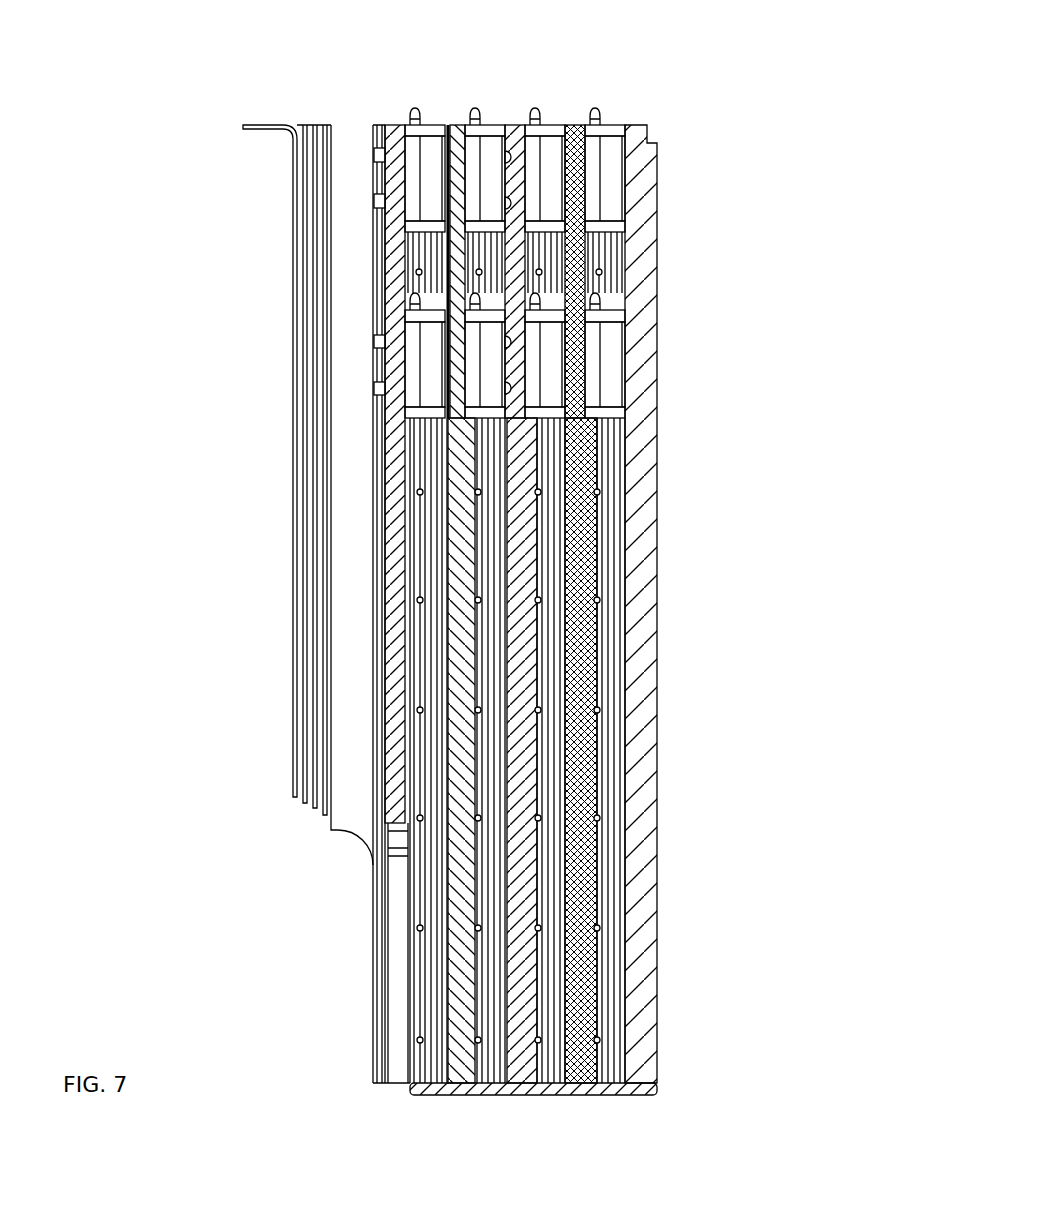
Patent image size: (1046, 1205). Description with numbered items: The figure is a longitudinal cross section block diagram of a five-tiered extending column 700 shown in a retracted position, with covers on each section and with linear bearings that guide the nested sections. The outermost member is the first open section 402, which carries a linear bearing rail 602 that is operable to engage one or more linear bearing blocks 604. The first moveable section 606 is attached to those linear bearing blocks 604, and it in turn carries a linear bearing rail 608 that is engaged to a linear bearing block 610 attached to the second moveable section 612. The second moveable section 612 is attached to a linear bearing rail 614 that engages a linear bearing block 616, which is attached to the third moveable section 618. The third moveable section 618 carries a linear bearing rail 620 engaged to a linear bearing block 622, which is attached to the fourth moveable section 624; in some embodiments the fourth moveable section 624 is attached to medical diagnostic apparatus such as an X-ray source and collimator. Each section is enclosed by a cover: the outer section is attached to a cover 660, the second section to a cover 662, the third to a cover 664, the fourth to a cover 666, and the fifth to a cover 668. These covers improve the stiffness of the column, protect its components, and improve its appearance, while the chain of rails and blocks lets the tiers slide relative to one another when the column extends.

The first open section 402 is at (642, 175).
The linear bearing rail 602 is at (613, 515).
The linear bearing block 604 is at (612, 175).
The first moveable section 606 is at (580, 177).
The linear bearing rail 608 is at (553, 555).
The linear bearing block 610 is at (595, 113).
The second moveable section 612 is at (550, 175).
The linear bearing rail 614 is at (490, 578).
The linear bearing block 616 is at (497, 173).
The third moveable section 618 is at (460, 183).
The linear bearing rail 620 is at (430, 650).
The linear bearing block 622 is at (431, 177).
The fourth moveable section 624 is at (397, 135).
The cover 660 is at (297, 386).
The cover 662 is at (307, 341).
The cover 664 is at (315, 308).
The cover 666 is at (323, 276).
The cover 668 is at (330, 242).
The five-tiered extending column 700 is at (774, 1024).